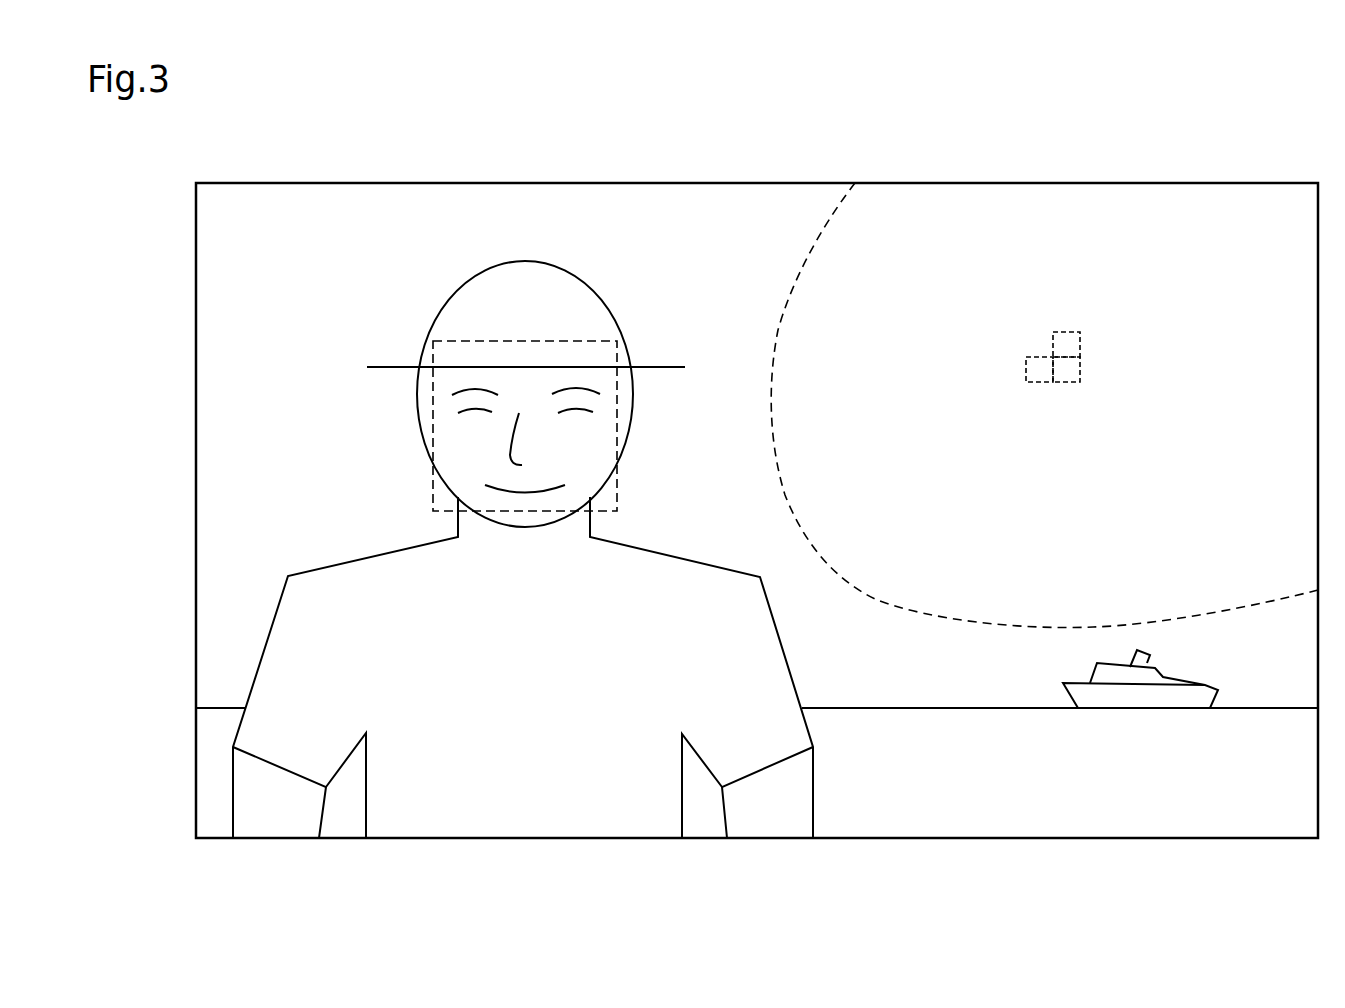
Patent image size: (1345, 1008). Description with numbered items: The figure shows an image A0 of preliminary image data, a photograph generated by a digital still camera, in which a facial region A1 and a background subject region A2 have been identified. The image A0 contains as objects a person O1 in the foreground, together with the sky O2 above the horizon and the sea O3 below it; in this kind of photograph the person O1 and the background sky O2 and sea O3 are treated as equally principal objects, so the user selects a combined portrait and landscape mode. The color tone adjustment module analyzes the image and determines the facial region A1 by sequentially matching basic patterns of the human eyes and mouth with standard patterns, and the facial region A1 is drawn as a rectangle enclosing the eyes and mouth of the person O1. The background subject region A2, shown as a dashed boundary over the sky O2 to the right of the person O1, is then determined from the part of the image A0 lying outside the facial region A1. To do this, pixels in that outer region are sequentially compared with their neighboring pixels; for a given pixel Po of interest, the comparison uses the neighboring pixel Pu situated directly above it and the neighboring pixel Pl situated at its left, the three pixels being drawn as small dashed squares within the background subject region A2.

The image A0 is at (558, 183).
The facial region A1 is at (617, 497).
The background subject region A2 is at (828, 251).
The person O1 is at (588, 805).
The sky O2 is at (287, 236).
The sea O3 is at (1177, 813).
The neighboring pixel situated above Pu is at (1077, 340).
The neighboring pixel situated at left Pl is at (1027, 370).
The pixel of interest Po is at (1077, 375).